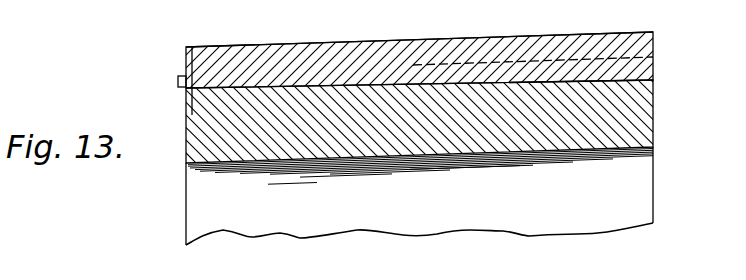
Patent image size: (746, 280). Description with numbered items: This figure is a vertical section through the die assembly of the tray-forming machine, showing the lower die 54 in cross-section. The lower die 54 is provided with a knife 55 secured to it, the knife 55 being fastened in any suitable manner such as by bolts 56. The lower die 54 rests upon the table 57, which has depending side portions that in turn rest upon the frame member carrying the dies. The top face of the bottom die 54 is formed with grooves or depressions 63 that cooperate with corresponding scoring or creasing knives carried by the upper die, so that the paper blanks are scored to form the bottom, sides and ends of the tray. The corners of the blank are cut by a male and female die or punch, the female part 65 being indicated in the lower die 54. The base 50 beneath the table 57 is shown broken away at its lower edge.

The base plate 50 is at (416, 227).
The lower die 54 is at (360, 76).
The knife 55 is at (183, 60).
The bolts 56 is at (178, 80).
The table 57 is at (471, 141).
The grooves or depressions 63 is at (277, 46).
The female die or punch 65 is at (567, 54).